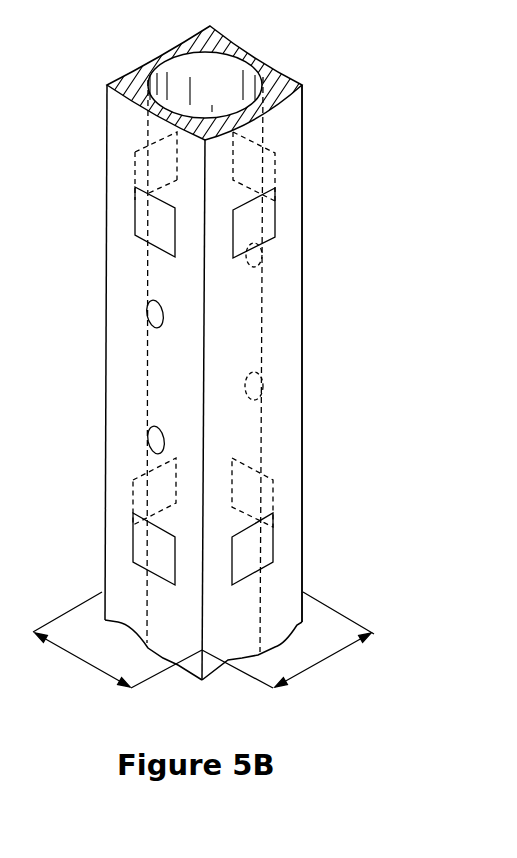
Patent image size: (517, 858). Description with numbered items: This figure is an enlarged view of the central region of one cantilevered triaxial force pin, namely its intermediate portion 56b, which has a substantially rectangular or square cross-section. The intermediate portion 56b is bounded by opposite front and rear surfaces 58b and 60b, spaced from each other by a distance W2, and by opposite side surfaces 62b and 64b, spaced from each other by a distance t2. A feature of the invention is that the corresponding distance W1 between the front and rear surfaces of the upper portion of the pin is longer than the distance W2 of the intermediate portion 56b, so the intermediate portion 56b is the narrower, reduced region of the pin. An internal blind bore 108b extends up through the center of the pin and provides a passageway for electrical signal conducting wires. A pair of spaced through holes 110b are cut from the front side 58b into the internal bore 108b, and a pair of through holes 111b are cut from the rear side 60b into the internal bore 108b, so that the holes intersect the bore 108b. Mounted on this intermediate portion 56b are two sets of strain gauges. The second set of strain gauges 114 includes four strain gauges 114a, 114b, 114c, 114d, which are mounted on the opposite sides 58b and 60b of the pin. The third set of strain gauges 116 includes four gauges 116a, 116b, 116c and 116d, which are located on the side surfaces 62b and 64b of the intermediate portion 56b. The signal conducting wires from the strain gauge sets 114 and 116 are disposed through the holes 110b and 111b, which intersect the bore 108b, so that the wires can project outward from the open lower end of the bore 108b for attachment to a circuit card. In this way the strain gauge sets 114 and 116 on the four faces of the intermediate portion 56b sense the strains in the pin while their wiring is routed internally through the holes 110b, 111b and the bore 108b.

The second set of strain gauges 114 is at (80, 257).
The third set of strain gauges 116 is at (350, 190).
The strain gauge 114a is at (147, 225).
The strain gauge 114b is at (141, 551).
The strain gauge 114c is at (253, 160).
The strain gauge 114d is at (248, 478).
The strain gauge 116a is at (253, 233).
The strain gauge 116b is at (250, 548).
The strain gauge 116c is at (157, 157).
The strain gauge 116d is at (155, 487).
The through holes 110b is at (163, 311).
The through holes 111b is at (253, 258).
The front surface 58b is at (148, 348).
The rear surface 60b is at (277, 302).
The side surface 62b is at (230, 348).
The side surface 64b is at (128, 387).
The intermediate portion 56b is at (381, 482).
The blind bore 108b is at (253, 582).
The distance between side surfaces t2 is at (117, 642).
The distance between front and rear surfaces W2 is at (288, 645).
The distance between front and rear surfaces of upper portion W1 is at (8, 353).